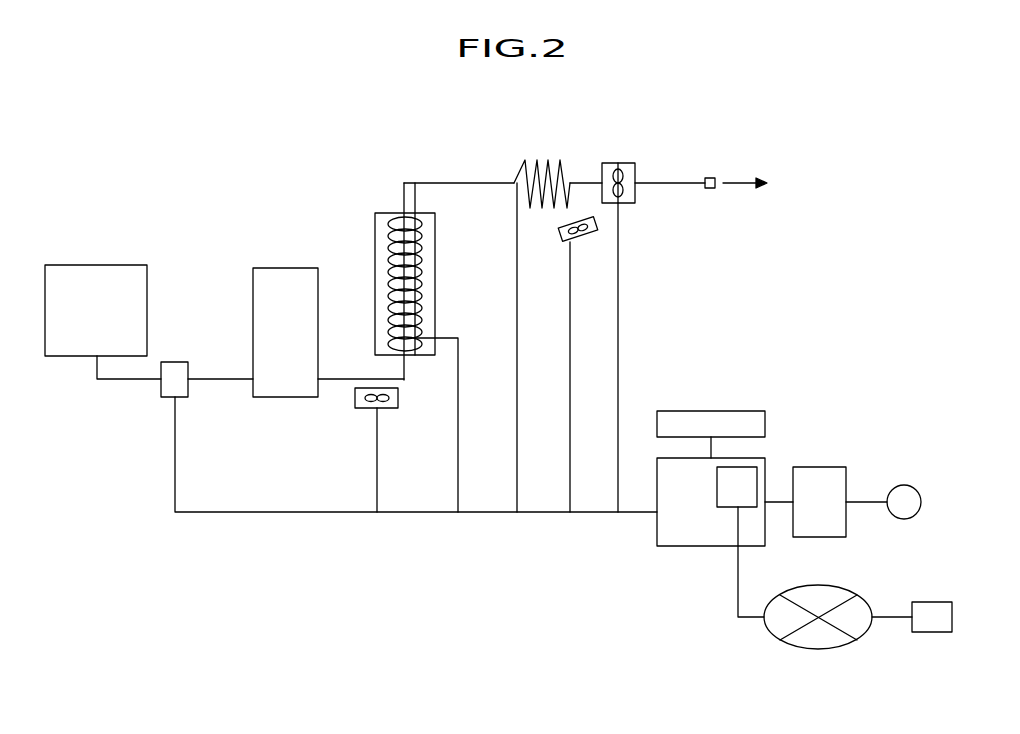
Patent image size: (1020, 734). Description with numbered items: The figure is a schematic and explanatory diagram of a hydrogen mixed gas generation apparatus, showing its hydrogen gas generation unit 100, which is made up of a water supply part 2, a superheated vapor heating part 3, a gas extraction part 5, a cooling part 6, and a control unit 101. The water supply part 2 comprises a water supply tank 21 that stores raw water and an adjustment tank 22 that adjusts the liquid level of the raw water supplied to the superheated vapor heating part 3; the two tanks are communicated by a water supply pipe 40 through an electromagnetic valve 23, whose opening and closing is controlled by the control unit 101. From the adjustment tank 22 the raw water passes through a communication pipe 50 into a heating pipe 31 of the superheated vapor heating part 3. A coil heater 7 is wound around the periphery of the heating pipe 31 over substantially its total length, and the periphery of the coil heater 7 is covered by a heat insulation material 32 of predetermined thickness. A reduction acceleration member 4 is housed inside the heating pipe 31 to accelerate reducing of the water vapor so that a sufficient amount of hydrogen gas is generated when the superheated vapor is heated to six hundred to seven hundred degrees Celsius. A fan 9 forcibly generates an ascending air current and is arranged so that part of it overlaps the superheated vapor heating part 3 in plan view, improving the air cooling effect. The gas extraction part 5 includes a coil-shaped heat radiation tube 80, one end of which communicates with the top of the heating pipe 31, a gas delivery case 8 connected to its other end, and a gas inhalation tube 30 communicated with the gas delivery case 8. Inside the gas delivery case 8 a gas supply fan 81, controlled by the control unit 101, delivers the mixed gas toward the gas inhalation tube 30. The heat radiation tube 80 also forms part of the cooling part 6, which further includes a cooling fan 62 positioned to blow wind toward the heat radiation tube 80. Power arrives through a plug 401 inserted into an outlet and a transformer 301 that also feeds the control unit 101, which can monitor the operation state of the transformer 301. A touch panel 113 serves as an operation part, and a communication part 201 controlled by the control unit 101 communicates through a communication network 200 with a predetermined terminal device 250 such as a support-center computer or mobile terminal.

The hydrogen gas generation unit 100 is at (139, 144).
The water supply part 2 is at (218, 423).
The water supply tank 21 is at (99, 265).
The adjustment tank 22 is at (289, 268).
The electromagnetic valve 23 is at (175, 362).
The water supply pipe 40 is at (128, 380).
The communication pipe 50 is at (337, 380).
The superheated vapor heating part 3 is at (395, 332).
The heat insulation material 32 is at (375, 228).
The coil heater 7 is at (390, 256).
The reduction acceleration member 4 is at (416, 228).
The heating pipe 31 is at (410, 357).
The fan 9 is at (386, 409).
The cooling part 6 is at (533, 299).
The heat radiation tube 80 is at (521, 162).
The gas delivery case 8 is at (632, 152).
The gas supply fan 81 is at (623, 172).
The cooling fan 62 is at (582, 242).
The gas extraction part 5 is at (721, 205).
The gas inhalation tube 30 is at (676, 204).
The touch panel 113 is at (700, 411).
The control unit 101 is at (684, 546).
The communication part 201 is at (748, 467).
The transformer 301 is at (830, 467).
The plug 401 is at (905, 485).
The communication network 200 is at (778, 636).
The predetermined terminal device 250 is at (935, 602).